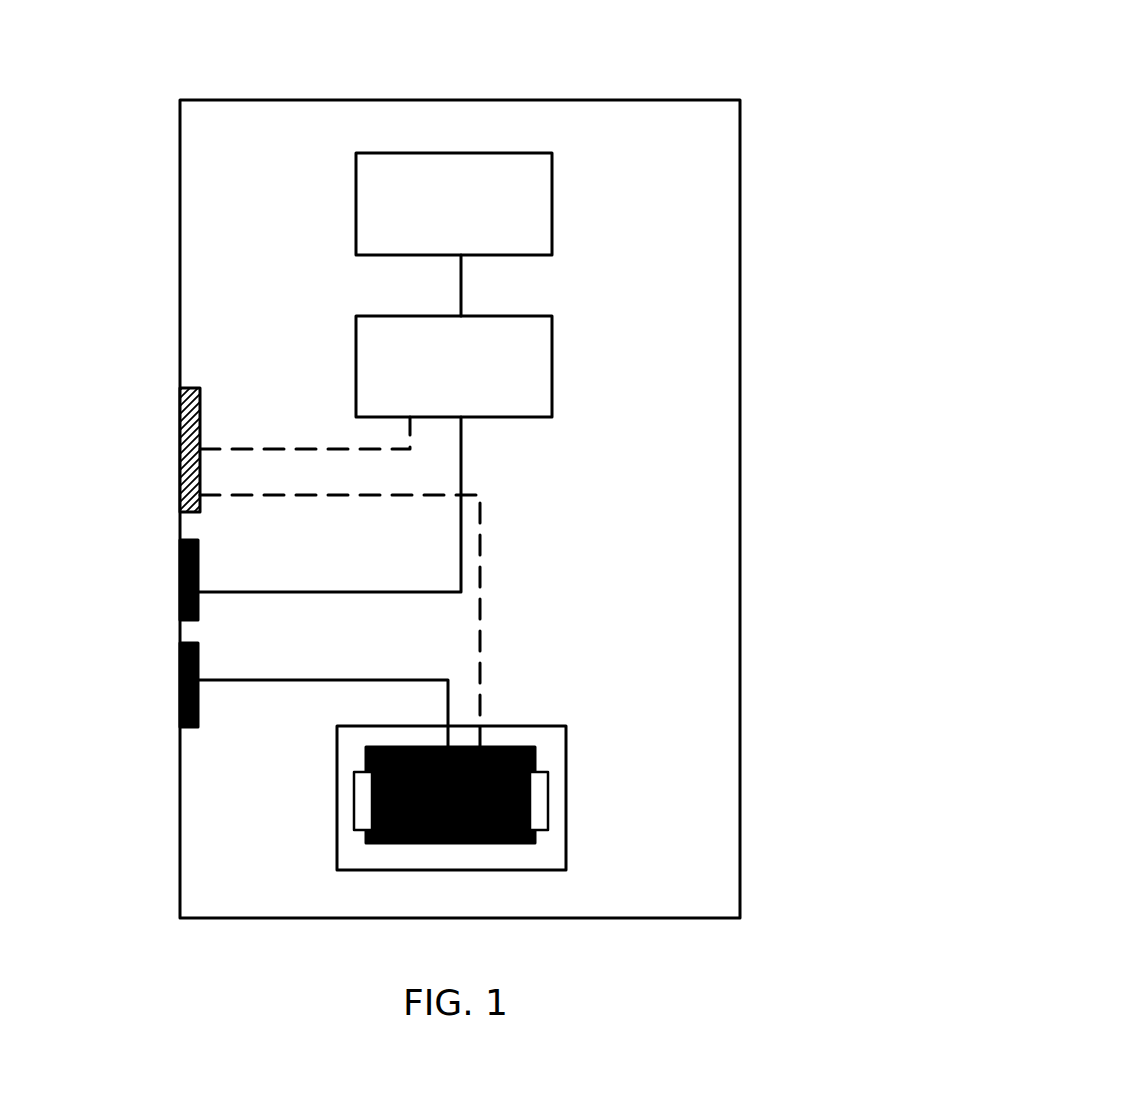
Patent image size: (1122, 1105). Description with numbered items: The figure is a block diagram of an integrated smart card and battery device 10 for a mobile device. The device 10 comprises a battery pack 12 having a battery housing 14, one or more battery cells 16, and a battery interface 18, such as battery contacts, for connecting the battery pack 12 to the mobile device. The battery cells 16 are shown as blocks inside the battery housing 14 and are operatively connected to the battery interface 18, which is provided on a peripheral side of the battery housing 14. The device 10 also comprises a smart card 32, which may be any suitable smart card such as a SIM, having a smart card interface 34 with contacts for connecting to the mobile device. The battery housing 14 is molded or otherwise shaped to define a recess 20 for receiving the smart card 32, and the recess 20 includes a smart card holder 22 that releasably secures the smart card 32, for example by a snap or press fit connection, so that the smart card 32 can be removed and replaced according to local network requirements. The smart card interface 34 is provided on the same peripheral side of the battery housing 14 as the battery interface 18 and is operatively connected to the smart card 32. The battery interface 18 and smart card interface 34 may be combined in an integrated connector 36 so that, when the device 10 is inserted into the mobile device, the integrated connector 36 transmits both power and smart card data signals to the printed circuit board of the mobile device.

The integrated smart card and battery device 10 is at (786, 73).
The battery pack 12 is at (740, 206).
The battery housing 14 is at (690, 380).
The battery cells 16 is at (553, 206).
The battery interface 18 is at (178, 588).
The recess 20 is at (337, 783).
The smart card holder 22 is at (354, 828).
The smart card 32 is at (493, 745).
The smart card interface 34 is at (178, 692).
The integrated connector 36 is at (180, 448).